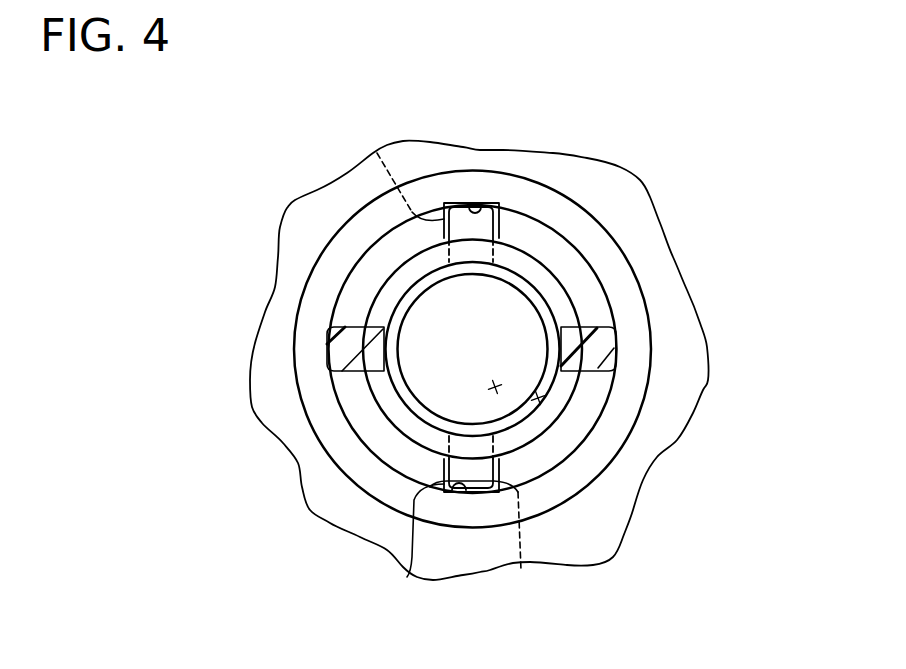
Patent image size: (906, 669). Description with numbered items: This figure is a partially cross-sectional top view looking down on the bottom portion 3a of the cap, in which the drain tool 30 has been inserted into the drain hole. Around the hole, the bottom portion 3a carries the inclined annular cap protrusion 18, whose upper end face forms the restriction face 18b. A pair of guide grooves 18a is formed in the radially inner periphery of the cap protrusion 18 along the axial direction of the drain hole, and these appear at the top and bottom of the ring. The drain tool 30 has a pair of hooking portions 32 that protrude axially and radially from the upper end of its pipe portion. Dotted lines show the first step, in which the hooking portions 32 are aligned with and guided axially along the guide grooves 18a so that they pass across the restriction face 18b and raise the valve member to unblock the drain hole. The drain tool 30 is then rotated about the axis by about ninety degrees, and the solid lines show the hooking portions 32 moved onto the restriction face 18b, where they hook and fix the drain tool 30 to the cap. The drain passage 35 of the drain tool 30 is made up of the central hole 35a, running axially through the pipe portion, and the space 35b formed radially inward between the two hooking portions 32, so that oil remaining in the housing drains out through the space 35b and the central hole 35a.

The bottom portion 3a is at (590, 180).
The cap protrusion 18 is at (618, 248).
The guide groove 18a is at (490, 204).
The restriction face 18b is at (588, 290).
The drain tool 30 is at (385, 433).
The hooking portion 32 is at (377, 153).
The drain passage 35 is at (643, 442).
The central hole 35a is at (497, 389).
The space 35b is at (541, 401).